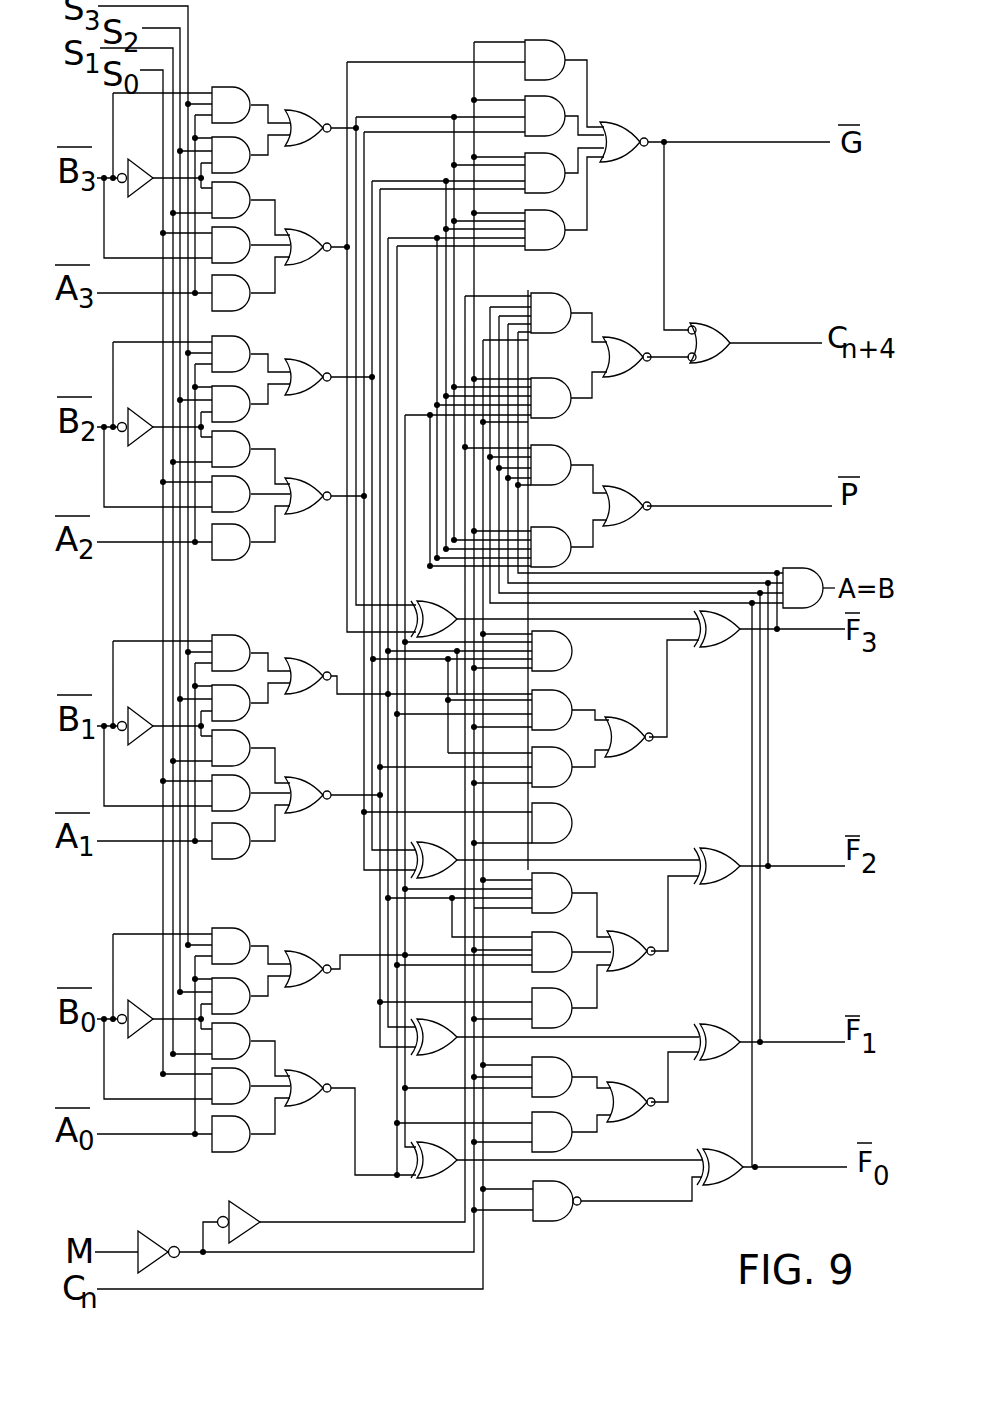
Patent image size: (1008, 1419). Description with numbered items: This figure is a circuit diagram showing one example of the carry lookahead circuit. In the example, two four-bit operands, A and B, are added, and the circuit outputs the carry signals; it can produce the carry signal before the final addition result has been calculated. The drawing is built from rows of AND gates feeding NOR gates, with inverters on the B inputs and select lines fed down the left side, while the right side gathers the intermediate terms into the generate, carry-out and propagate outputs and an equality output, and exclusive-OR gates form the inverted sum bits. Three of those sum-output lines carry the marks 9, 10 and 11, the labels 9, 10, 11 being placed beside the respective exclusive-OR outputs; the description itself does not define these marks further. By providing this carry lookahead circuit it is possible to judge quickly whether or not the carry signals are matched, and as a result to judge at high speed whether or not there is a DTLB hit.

The exclusive-OR output gate for F0 9 is at (772, 1161).
The exclusive-OR output gate for F1 10 is at (769, 1037).
The exclusive-OR output gate for F2 11 is at (769, 861).